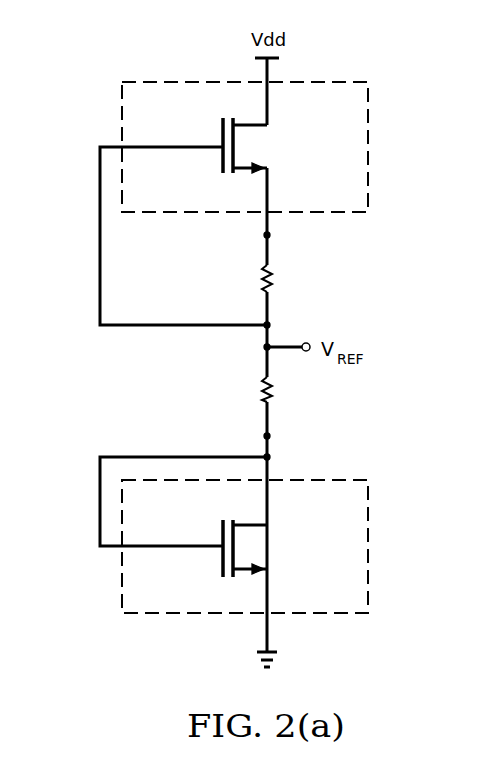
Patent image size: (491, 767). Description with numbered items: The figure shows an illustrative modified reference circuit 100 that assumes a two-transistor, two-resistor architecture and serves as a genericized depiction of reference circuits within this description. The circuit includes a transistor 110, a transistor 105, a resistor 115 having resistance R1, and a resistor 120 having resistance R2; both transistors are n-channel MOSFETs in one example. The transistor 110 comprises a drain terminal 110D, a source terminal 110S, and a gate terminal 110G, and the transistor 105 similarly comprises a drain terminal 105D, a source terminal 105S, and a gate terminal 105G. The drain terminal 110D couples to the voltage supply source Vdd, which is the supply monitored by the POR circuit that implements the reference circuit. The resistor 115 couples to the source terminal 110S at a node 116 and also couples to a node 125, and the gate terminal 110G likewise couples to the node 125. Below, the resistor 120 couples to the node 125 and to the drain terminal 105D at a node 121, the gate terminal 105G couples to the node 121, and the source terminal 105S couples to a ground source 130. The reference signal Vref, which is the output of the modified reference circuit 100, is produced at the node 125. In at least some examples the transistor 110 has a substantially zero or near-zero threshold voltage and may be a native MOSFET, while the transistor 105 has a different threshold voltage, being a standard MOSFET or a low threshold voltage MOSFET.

The modified reference circuit 100 is at (74, 128).
The transistor 110 is at (286, 147).
The gate terminal 110G is at (221, 134).
The drain terminal 110D is at (259, 127).
The source terminal 110S is at (247, 166).
The node 116 is at (262, 236).
The resistor 115 is at (273, 283).
The node 125 is at (262, 353).
The resistor 120 is at (273, 395).
The node 121 is at (272, 438).
The transistor 105 is at (286, 546).
The gate terminal 105G is at (221, 558).
The drain terminal 105D is at (258, 528).
The source terminal 105S is at (247, 566).
The ground source 130 is at (251, 662).